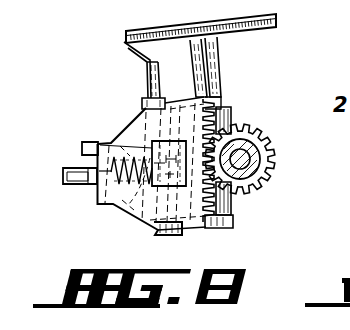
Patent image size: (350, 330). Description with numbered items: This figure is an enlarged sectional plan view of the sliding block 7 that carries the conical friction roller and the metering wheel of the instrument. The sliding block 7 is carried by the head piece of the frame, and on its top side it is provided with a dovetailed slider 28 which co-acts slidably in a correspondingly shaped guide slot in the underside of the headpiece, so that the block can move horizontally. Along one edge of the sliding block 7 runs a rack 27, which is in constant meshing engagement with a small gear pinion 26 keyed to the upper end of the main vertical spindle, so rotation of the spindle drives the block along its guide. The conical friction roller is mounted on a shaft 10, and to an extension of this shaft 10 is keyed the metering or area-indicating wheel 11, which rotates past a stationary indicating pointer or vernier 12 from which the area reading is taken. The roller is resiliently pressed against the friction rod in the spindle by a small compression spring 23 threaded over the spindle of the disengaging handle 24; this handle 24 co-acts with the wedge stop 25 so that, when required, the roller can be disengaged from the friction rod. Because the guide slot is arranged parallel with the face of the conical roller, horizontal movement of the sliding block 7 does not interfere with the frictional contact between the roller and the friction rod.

The sliding block 7 is at (130, 127).
The shaft 10 is at (219, 70).
The metering or area-indicating wheel 11 is at (150, 31).
The stationary indicating pointer or vernier 12 is at (146, 67).
The small compression spring 23 is at (126, 208).
The disengaging handle 24 is at (64, 173).
The wedge stop 25 is at (82, 148).
The small gear pinion 26 is at (279, 146).
The rack 27 is at (231, 110).
The dovetailed slider 28 is at (112, 138).